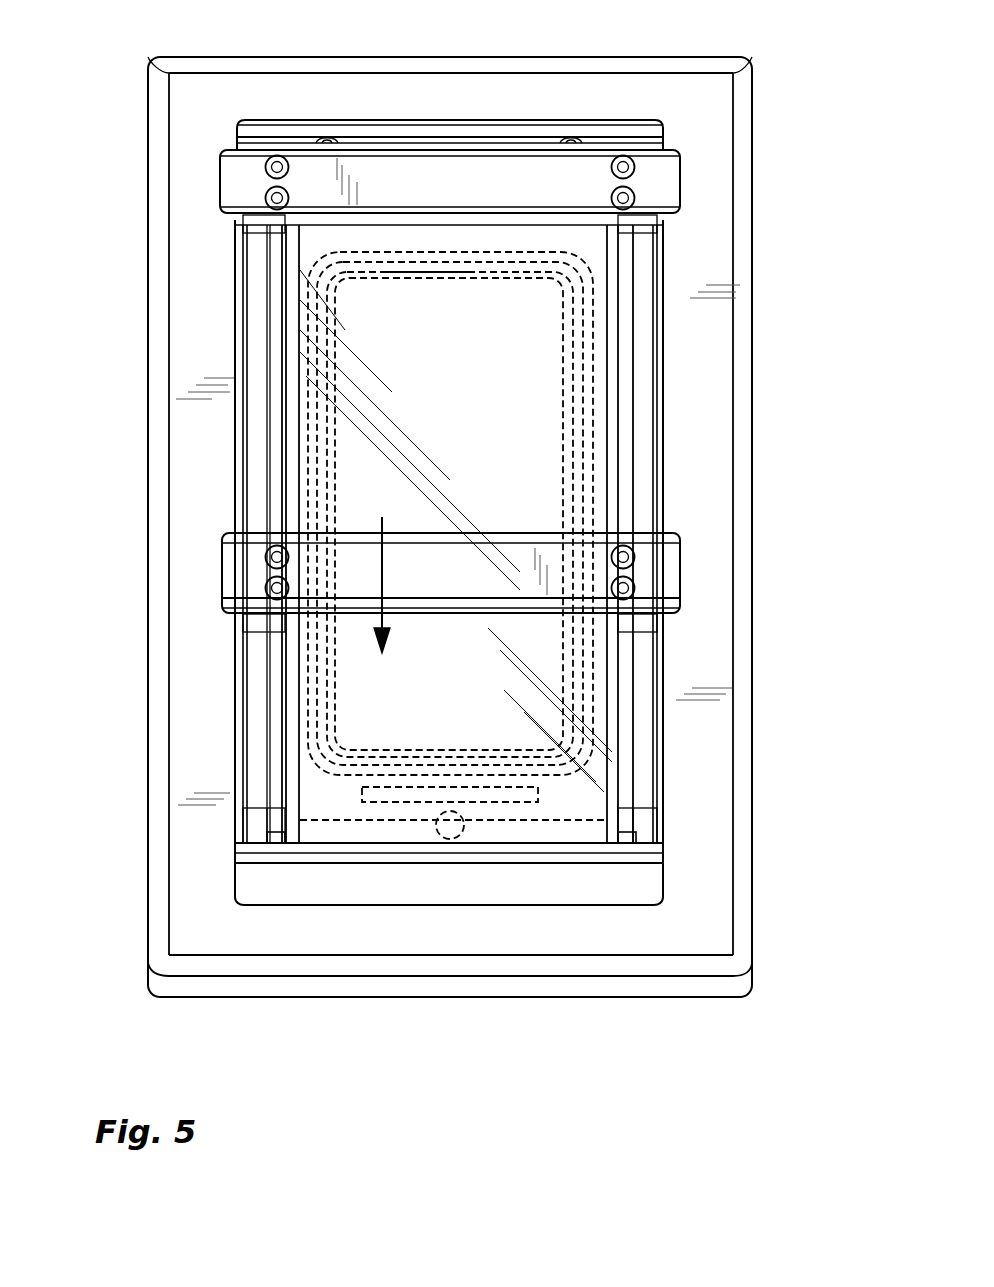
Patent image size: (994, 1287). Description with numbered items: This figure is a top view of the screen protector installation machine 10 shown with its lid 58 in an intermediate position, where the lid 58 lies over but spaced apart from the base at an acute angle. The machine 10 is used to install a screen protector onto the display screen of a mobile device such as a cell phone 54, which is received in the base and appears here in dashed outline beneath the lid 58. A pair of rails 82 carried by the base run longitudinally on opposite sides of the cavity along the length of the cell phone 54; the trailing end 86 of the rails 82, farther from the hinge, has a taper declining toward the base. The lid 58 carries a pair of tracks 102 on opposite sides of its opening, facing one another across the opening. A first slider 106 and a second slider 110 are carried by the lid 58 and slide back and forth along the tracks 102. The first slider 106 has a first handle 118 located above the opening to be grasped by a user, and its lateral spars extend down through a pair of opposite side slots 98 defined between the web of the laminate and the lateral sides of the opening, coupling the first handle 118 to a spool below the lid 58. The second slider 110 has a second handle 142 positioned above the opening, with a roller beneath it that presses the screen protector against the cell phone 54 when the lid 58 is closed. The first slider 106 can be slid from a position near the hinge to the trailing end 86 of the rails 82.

The screen protector installation machine 10 is at (125, 1010).
The cell phone 54 is at (527, 700).
The lid 58 is at (187, 327).
The rails 82 is at (623, 423).
The trailing end 86 is at (277, 842).
The side slots 98 is at (293, 420).
The tracks 102 is at (660, 287).
The first slider 106 is at (665, 553).
The second slider 110 is at (657, 158).
The first handle 118 is at (660, 583).
The second handle 142 is at (655, 185).